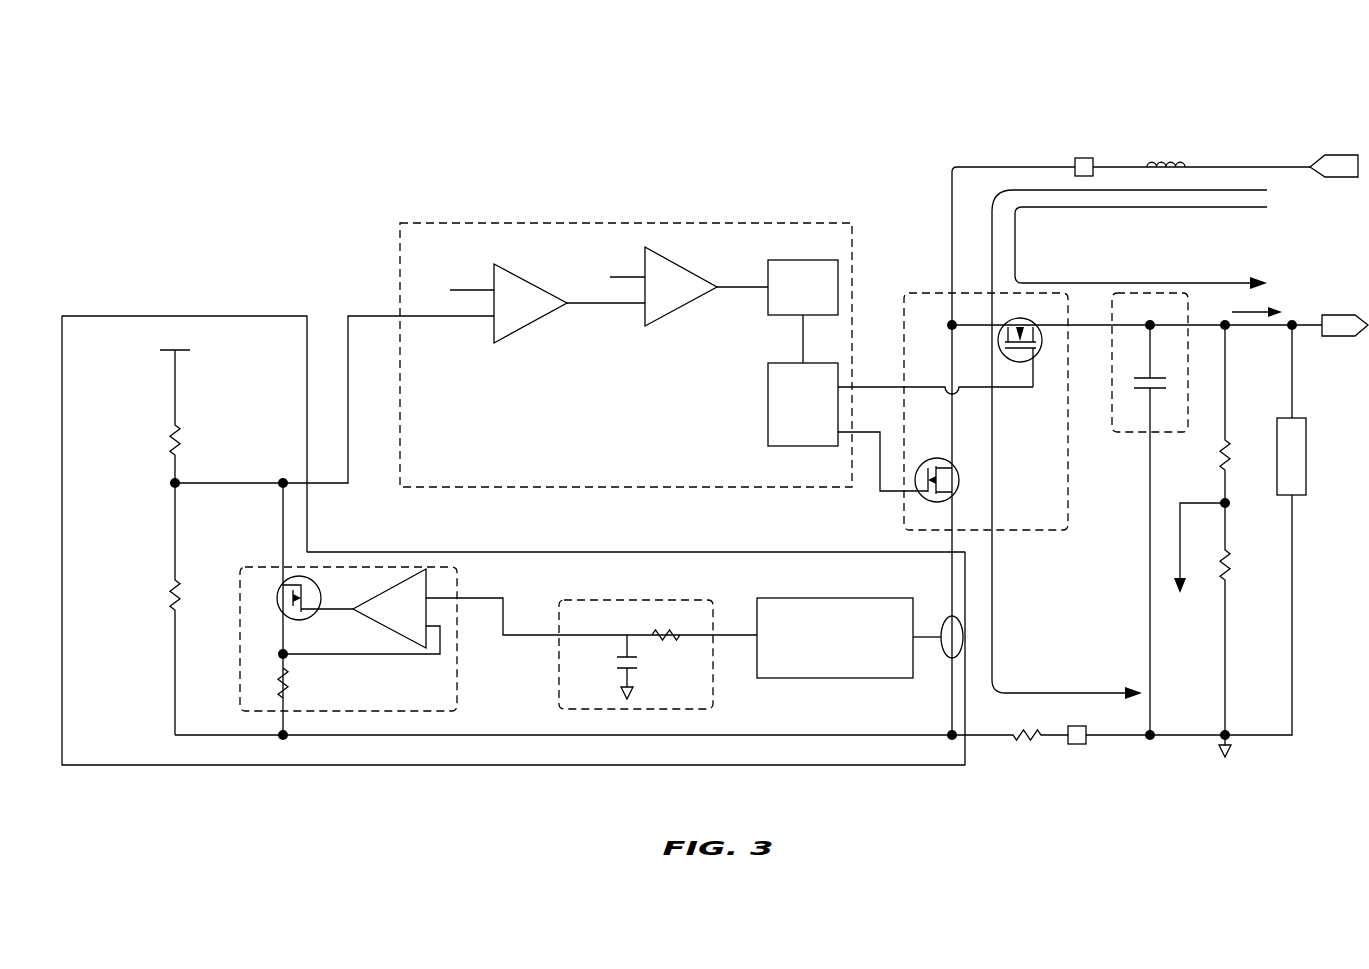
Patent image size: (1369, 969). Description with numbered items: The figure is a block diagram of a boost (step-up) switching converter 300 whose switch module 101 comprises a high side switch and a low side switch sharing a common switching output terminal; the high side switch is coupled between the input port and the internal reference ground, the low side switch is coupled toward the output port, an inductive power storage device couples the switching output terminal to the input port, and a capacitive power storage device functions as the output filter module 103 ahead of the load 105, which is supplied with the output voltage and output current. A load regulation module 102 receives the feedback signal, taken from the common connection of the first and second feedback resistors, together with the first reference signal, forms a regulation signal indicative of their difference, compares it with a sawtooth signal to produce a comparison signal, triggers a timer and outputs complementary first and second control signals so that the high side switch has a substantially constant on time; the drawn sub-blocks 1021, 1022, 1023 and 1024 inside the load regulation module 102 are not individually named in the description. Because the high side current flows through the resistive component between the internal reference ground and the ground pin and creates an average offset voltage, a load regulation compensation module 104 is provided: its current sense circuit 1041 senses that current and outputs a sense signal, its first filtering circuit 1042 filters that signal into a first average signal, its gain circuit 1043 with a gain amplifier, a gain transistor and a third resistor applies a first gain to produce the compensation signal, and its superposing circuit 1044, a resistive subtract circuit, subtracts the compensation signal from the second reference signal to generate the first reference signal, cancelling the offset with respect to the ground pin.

The switching converter 300 is at (130, 115).
The load regulation compensation module 104 is at (228, 315).
The superposing circuit 1044 is at (135, 413).
The gain circuit 1043 is at (348, 639).
The first filtering circuit 1042 is at (642, 600).
The current sense circuit 1041 is at (868, 678).
The load regulation module 102 is at (626, 355).
The error amplifier 1021 is at (512, 264).
The comparator 1022 is at (663, 316).
The logic circuit 1023 is at (803, 287).
The driver circuit 1024 is at (803, 404).
The switch module 101 is at (986, 410).
The output filter module 103 is at (1115, 437).
The load 105 is at (1308, 418).